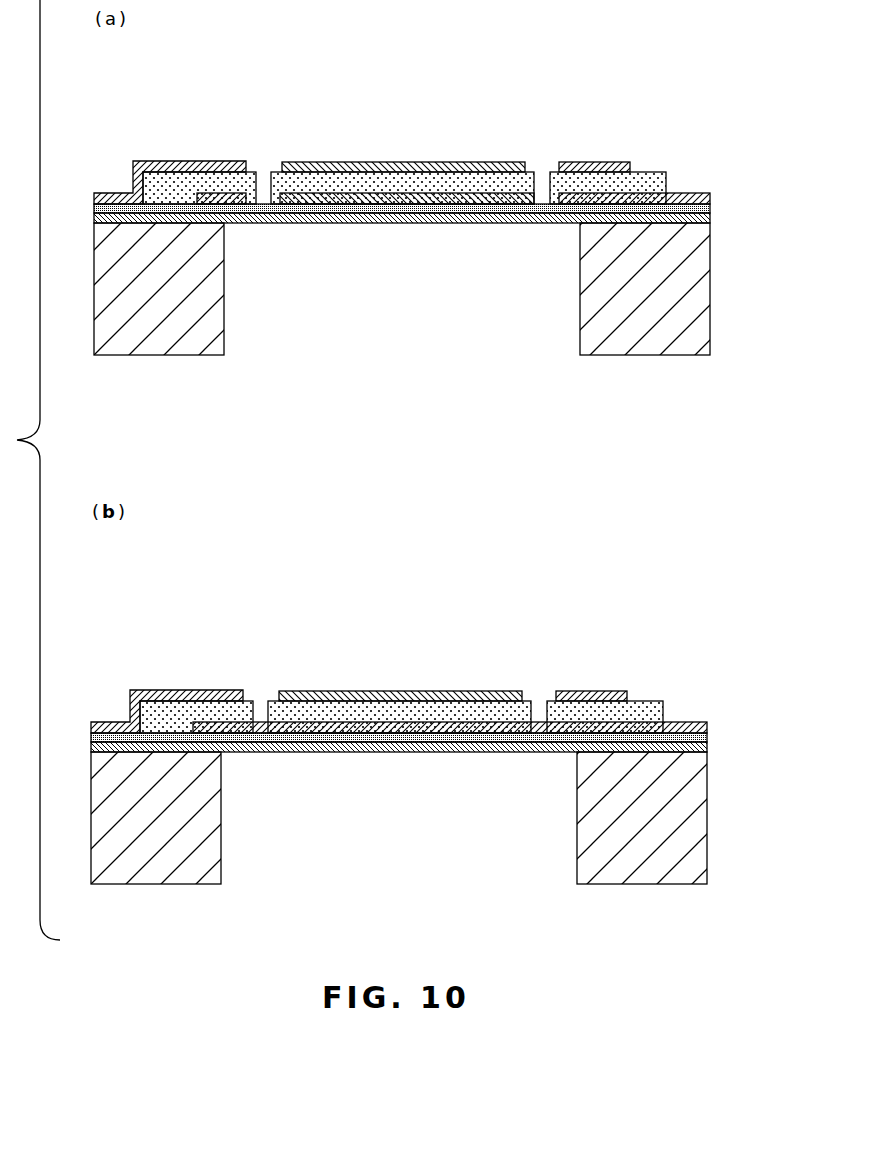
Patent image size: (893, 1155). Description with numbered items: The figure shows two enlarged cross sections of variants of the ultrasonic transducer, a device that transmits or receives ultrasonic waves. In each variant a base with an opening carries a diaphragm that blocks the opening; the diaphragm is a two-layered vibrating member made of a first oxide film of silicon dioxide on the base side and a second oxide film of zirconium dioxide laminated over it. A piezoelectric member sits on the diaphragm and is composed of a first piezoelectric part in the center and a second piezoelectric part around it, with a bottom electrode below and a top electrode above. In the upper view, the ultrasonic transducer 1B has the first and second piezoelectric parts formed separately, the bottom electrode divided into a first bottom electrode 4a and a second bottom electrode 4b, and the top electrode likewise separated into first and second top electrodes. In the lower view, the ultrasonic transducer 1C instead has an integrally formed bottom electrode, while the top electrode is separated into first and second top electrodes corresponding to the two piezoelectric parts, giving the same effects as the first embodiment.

The ultrasonic transducer 1B is at (700, 103).
The ultrasonic transducer 1C is at (439, 750).
The first bottom electrode 4a is at (285, 196).
The second bottom electrode 4b is at (237, 198).